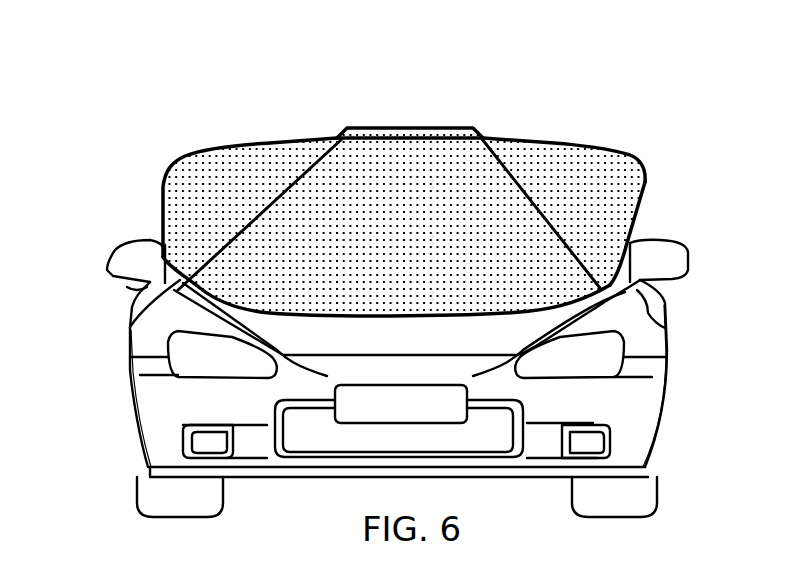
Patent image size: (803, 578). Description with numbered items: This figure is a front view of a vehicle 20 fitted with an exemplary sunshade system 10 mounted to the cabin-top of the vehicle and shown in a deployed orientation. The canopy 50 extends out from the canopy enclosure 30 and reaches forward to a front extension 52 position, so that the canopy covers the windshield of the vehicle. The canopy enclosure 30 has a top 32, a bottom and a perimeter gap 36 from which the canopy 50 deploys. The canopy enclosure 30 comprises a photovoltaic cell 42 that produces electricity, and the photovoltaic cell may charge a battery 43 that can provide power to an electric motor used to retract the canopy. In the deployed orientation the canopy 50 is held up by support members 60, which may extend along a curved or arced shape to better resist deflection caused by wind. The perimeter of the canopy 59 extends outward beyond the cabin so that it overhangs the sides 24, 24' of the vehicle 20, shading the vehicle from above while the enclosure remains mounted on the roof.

The sunshade system 10 is at (173, 151).
The vehicle 20 is at (143, 350).
The side of the vehicle 24 is at (106, 256).
The side of the vehicle 24' is at (686, 270).
The canopy enclosure 30 is at (443, 130).
The top of the canopy enclosure 32 is at (483, 130).
The perimeter gap 36 is at (483, 138).
The photovoltaic cell 42 is at (370, 127).
The battery 43 is at (417, 137).
The canopy 50 is at (573, 167).
The front extension 52 is at (380, 319).
The perimeter of the canopy 59 is at (157, 200).
The support members 60 is at (284, 188).